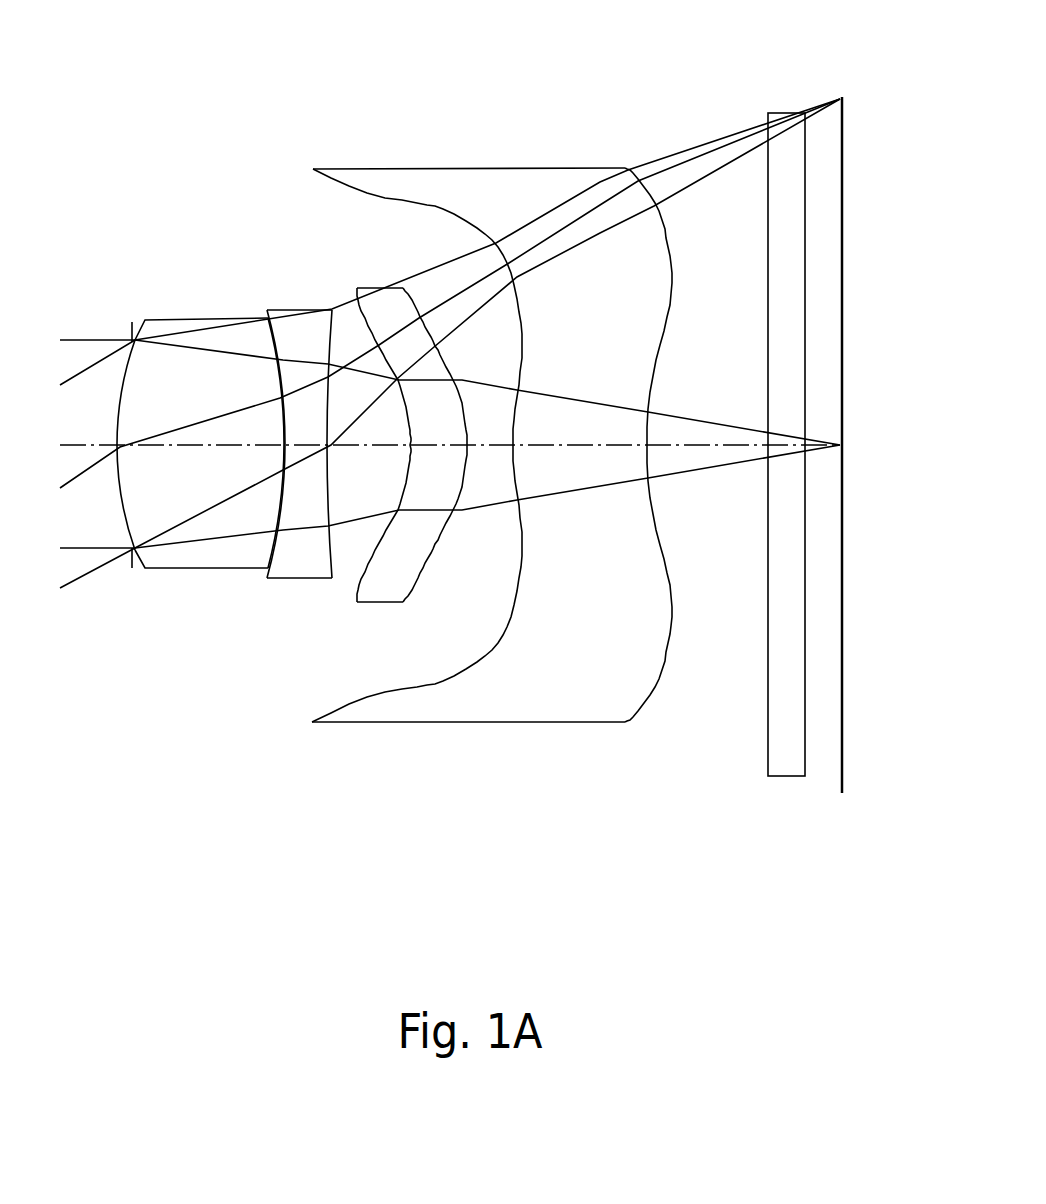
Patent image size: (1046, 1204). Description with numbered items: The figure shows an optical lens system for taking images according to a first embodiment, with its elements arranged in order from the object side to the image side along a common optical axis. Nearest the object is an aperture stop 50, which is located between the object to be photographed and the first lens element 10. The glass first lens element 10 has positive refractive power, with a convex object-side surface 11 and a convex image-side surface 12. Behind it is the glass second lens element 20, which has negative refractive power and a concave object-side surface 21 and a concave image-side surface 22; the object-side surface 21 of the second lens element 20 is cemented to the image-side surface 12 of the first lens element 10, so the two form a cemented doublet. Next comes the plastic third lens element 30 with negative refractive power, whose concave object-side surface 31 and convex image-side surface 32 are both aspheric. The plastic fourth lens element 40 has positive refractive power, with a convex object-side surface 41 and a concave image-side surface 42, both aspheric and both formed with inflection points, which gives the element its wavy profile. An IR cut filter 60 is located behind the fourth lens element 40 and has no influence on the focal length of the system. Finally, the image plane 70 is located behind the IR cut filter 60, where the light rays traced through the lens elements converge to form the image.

The first lens element 10 is at (172, 453).
The object-side surface of first lens element 11 is at (123, 512).
The image-side surface of first lens element 12 is at (277, 502).
The second lens element 20 is at (297, 446).
The object-side surface of second lens element 21 is at (272, 552).
The image-side surface of second lens element 22 is at (336, 473).
The third lens element 30 is at (401, 437).
The object-side surface of third lens element 31 is at (362, 573).
The image-side surface of third lens element 32 is at (435, 547).
The fourth lens element 40 is at (506, 426).
The object-side surface of fourth lens element 41 is at (443, 682).
The image-side surface of fourth lens element 42 is at (648, 695).
The aperture stop 50 is at (130, 322).
The IR cut filter 60 is at (778, 113).
The image plane 70 is at (845, 125).